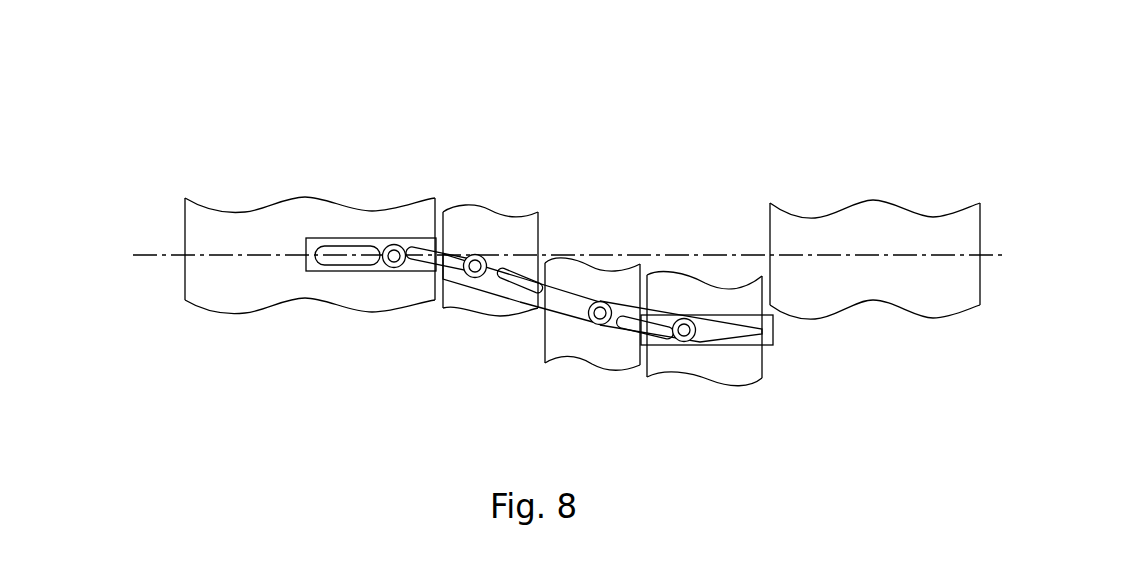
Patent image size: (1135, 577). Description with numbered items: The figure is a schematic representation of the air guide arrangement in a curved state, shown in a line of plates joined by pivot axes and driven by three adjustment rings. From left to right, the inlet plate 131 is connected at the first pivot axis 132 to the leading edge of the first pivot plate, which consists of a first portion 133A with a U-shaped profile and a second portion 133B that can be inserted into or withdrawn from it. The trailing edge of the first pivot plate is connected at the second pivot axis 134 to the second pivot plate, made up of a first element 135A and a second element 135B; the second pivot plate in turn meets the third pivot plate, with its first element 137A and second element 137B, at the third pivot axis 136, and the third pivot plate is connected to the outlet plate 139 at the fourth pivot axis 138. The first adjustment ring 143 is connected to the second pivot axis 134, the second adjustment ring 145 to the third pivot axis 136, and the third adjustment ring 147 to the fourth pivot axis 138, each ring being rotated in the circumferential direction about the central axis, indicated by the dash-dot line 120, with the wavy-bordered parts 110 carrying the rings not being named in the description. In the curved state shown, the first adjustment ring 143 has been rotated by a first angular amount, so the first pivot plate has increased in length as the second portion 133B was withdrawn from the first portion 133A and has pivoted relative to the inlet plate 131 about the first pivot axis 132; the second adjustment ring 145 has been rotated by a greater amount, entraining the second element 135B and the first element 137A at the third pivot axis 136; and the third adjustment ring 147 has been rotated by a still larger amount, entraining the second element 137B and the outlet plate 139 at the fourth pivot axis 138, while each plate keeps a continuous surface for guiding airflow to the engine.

The segment 110 is at (236, 229).
The central axis 120 is at (172, 257).
The inlet plate 131 is at (320, 273).
The first pivot axis 132 is at (384, 246).
The first portion 133A is at (402, 275).
The second portion 133B is at (455, 284).
The second pivot axis 134 is at (482, 256).
The first element of second pivot plate 135A is at (496, 296).
The second element of second pivot plate 135B is at (578, 322).
The third pivot axis 136 is at (611, 303).
The first element of third pivot plate 137A is at (622, 337).
The second element of third pivot plate 137B is at (667, 343).
The fourth pivot axis 138 is at (694, 324).
The outlet plate 139 is at (764, 349).
The first adjustment ring 143 is at (463, 212).
The second adjustment ring 145 is at (578, 271).
The third adjustment ring 147 is at (692, 289).